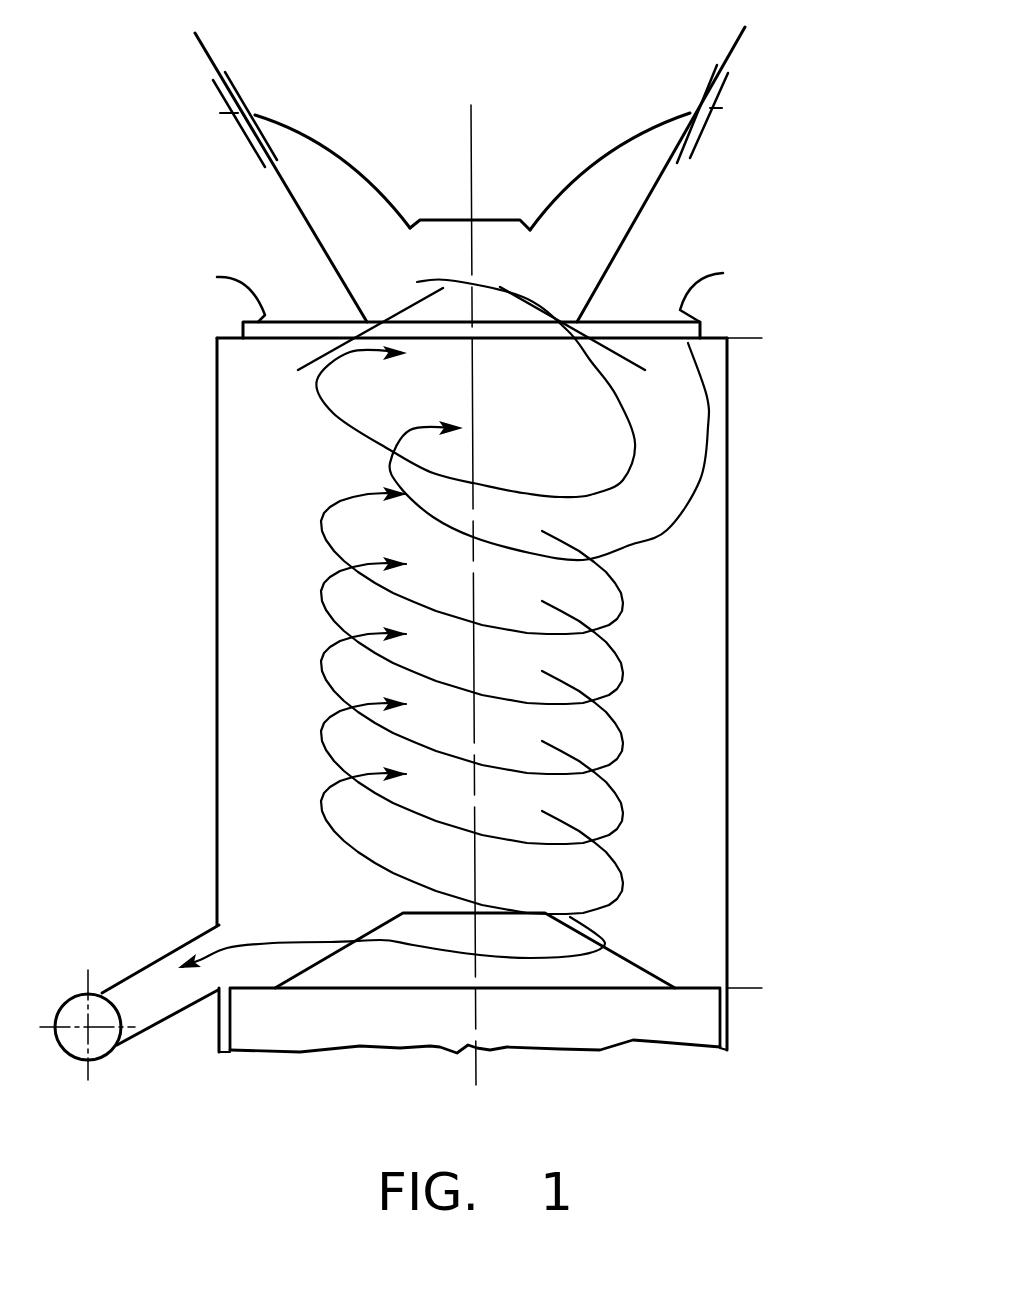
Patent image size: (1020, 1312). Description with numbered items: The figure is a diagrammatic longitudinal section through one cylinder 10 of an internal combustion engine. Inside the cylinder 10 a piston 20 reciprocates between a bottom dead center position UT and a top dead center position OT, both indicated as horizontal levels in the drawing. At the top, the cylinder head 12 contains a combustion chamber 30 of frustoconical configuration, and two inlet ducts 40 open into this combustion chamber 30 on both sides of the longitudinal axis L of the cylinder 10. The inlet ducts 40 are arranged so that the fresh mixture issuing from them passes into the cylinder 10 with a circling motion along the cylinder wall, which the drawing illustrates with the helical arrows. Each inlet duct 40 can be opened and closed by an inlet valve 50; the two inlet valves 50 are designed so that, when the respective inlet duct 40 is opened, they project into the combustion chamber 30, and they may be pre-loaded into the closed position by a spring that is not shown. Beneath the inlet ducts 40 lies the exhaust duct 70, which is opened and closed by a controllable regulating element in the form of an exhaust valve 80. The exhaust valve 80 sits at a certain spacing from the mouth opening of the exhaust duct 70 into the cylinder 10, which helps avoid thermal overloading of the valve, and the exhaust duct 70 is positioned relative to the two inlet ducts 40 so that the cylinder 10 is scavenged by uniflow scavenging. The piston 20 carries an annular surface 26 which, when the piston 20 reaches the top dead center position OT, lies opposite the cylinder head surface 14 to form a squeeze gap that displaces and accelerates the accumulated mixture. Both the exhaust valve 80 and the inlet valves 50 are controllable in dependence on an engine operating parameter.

The cylinder 10 is at (727, 645).
The cylinder head 12 is at (420, 220).
The cylinder head surface 14 is at (705, 340).
The piston 20 is at (383, 1025).
The annular surface 26 is at (700, 987).
The combustion chamber 30 is at (498, 240).
The inlet ducts 40 is at (250, 197).
The inlet valves 50 is at (323, 252).
The exhaust duct 70 is at (165, 993).
The exhaust valve 80 is at (76, 1042).
The longitudinal axis L is at (470, 138).
The top dead center position OT is at (768, 338).
The bottom dead center position UT is at (767, 994).